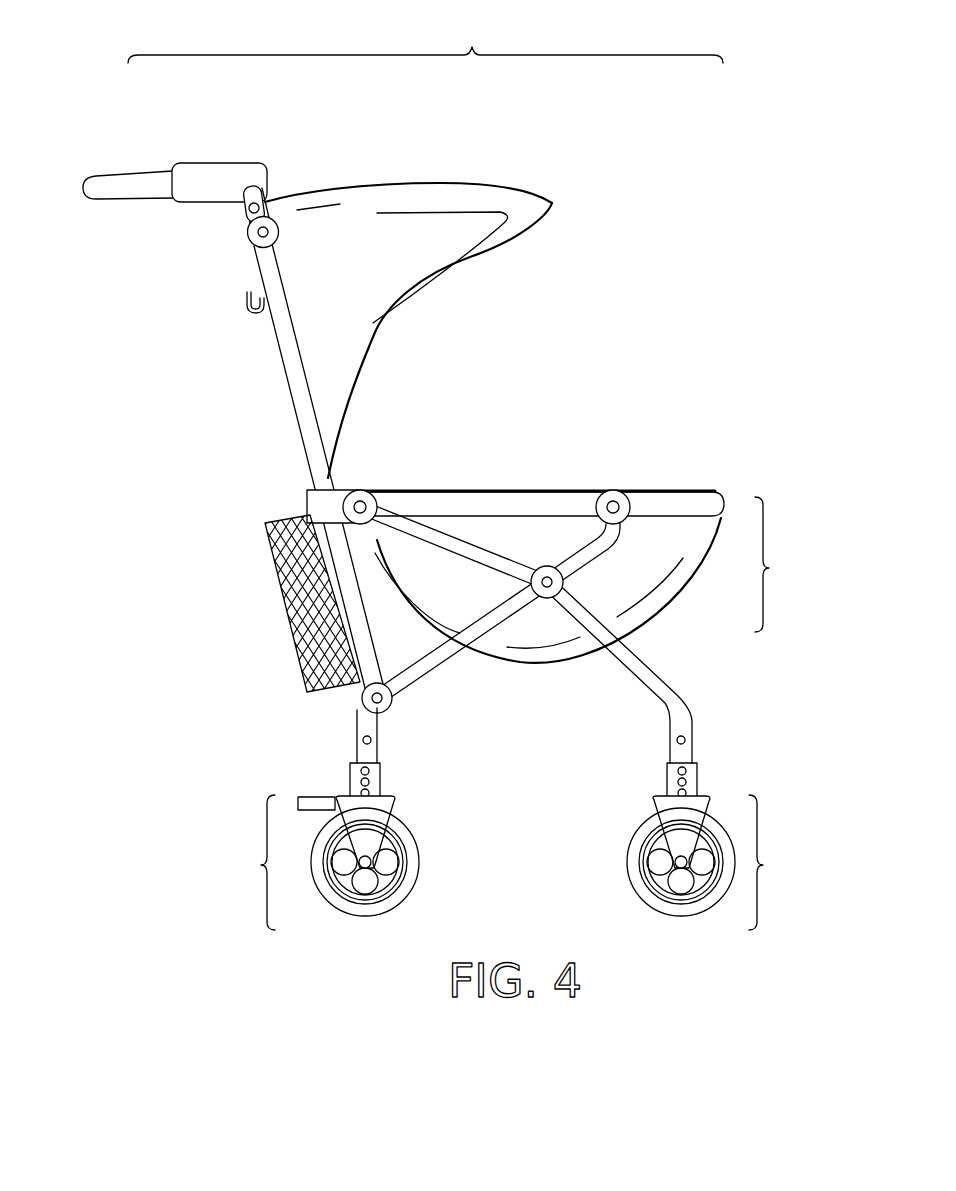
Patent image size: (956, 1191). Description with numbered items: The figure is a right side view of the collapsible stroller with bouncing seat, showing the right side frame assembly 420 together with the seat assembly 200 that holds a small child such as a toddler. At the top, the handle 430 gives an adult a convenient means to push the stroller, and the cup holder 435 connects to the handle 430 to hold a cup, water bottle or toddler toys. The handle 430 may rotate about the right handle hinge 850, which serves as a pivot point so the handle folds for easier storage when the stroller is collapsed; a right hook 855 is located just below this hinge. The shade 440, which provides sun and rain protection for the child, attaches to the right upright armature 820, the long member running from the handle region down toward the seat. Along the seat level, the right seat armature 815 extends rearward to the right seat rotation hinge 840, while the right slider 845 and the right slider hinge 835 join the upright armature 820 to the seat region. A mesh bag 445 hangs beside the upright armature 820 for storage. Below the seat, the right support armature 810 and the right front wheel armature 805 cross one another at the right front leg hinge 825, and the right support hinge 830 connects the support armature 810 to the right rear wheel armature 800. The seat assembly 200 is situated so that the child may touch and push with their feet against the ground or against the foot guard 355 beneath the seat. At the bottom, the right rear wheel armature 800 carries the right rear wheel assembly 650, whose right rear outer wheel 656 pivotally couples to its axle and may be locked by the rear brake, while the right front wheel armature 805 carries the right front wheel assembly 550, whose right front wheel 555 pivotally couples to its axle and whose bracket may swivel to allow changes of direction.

The right side frame assembly 420 is at (425, 35).
The cup holder 435 is at (222, 162).
The handle 430 is at (150, 190).
The right handle hinge 850 is at (253, 240).
The right hook 855 is at (243, 311).
The shade 440 is at (437, 257).
The right upright armature 820 is at (292, 412).
The right slider hinge 835 is at (370, 486).
The right front leg hinge 825 is at (546, 578).
The right seat armature 815 is at (613, 490).
The right seat rotation hinge 840 is at (694, 492).
The right slider 845 is at (303, 497).
The mesh bag 445 is at (313, 643).
The right support hinge 830 is at (360, 702).
The right rear wheel armature 800 is at (350, 733).
The right support armature 810 is at (460, 670).
The right front wheel armature 805 is at (650, 663).
The foot guard 355 is at (553, 662).
The seat assembly 200 is at (612, 572).
The right rear wheel assembly 650 is at (296, 846).
The right rear outer wheel 656 is at (354, 916).
The right front wheel assembly 550 is at (750, 846).
The right front wheel 555 is at (659, 914).